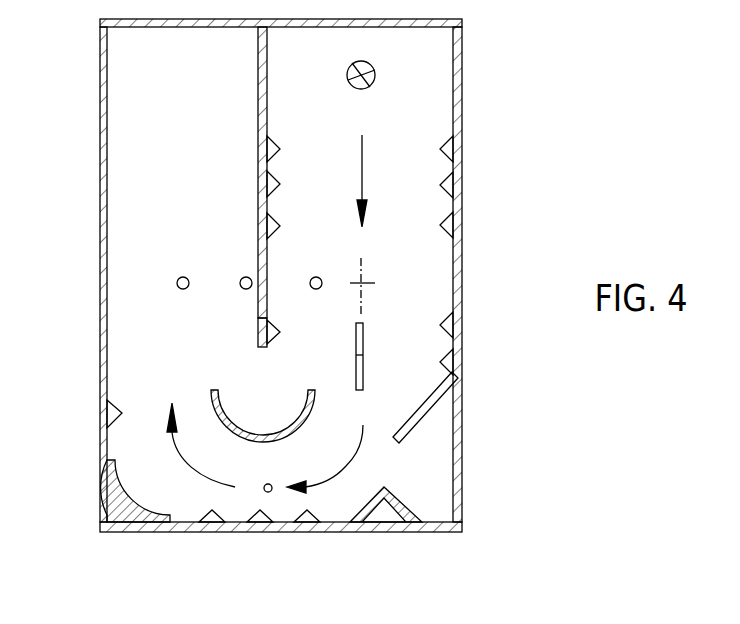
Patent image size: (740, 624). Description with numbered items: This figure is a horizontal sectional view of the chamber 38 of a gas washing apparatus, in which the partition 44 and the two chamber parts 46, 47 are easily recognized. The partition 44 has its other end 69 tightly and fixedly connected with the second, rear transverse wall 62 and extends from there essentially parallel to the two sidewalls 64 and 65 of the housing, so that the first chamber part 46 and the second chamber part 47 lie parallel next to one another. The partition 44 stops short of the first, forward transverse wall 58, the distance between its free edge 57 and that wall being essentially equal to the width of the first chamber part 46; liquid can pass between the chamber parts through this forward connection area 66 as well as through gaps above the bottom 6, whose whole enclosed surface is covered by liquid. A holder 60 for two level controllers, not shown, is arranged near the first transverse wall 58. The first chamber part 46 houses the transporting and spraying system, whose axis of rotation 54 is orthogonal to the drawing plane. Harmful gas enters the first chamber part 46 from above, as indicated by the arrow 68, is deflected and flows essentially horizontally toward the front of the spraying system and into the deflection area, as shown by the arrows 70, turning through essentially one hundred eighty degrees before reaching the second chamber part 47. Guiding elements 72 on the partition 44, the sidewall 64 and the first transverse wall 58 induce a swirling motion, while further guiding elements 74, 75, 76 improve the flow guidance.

The bottom 6 is at (278, 305).
The chamber 38 is at (252, 375).
The partition 44 is at (258, 318).
The first chamber part 46 is at (395, 163).
The second chamber part 47 is at (127, 282).
The axis of rotation 54 is at (361, 283).
The free edge 57 is at (268, 347).
The first transverse wall 58 is at (186, 532).
The holder 60 is at (377, 507).
The second transverse wall 62 is at (153, 27).
The sidewall 64 is at (453, 247).
The sidewall 65 is at (107, 243).
The forward connection area 66 is at (268, 492).
The arrow 68 is at (375, 72).
The other end 69 is at (268, 30).
The arrows 70 is at (363, 187).
The guiding elements 72 is at (447, 363).
The guiding element 74 is at (423, 420).
The guiding element 75 is at (190, 433).
The guiding element 76 is at (107, 500).